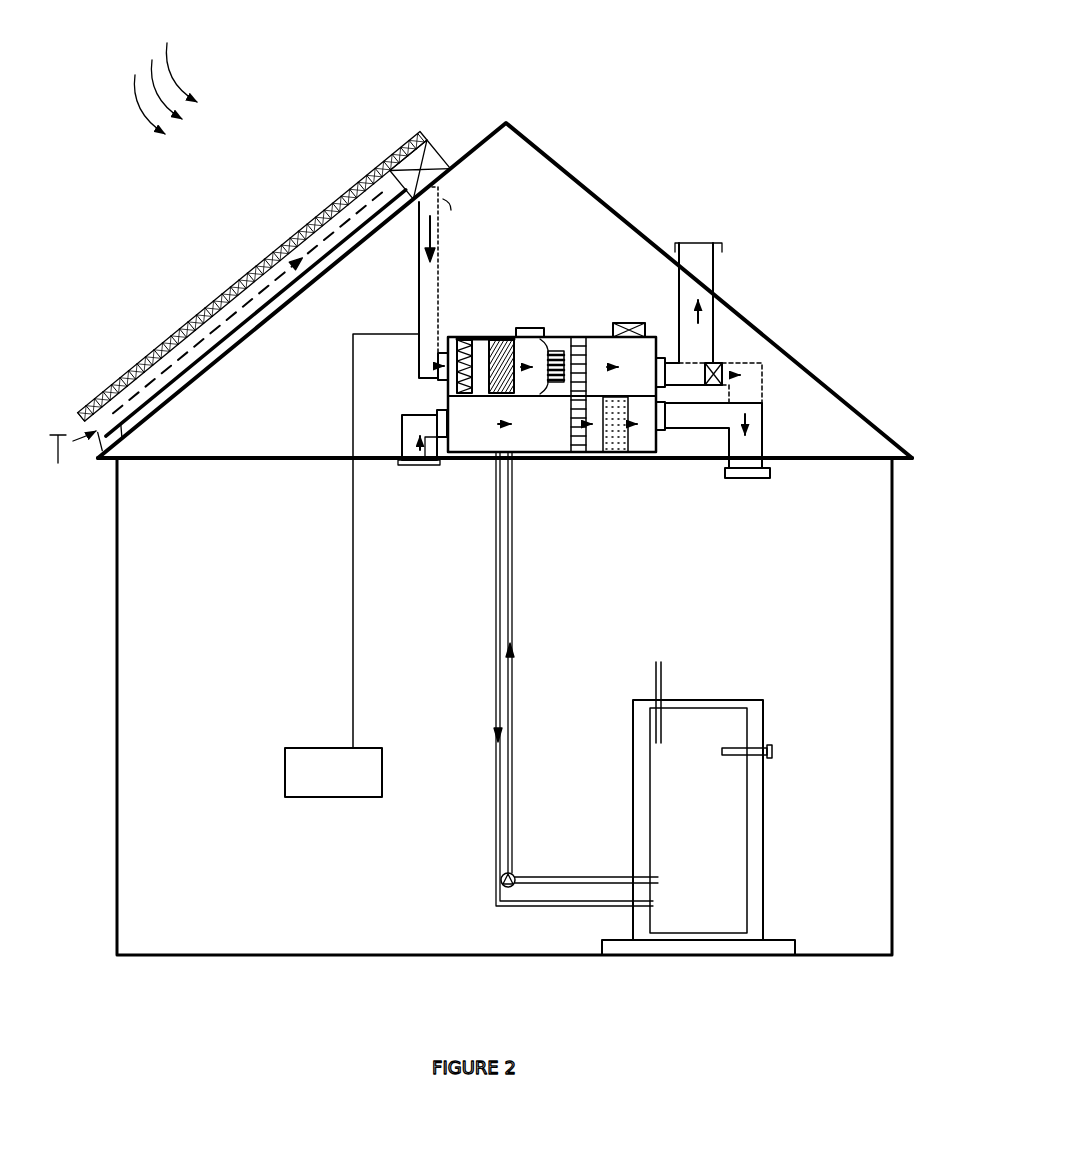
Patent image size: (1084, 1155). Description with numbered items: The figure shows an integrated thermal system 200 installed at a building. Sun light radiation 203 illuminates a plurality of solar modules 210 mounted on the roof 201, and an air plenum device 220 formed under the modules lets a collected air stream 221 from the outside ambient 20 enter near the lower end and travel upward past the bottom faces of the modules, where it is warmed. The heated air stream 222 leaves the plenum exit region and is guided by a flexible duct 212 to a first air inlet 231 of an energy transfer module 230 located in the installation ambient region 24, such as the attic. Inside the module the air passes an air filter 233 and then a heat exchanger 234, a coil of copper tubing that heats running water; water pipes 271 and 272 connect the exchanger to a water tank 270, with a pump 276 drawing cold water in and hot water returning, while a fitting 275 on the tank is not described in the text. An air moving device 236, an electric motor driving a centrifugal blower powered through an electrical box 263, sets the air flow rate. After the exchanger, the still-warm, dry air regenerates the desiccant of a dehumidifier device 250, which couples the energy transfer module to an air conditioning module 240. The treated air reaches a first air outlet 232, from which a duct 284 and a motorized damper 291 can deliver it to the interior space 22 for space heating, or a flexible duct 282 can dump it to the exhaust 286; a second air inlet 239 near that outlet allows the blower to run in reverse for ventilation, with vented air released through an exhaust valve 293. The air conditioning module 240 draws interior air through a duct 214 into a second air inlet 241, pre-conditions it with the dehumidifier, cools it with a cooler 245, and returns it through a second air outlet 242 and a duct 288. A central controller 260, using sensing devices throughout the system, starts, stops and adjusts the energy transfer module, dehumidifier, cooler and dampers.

The integrated thermal system 200 is at (498, 68).
The sun light radiation 203 is at (179, 88).
The ambient 20 is at (77, 376).
The interior space 22 is at (228, 551).
The building interior ambient space 24 is at (293, 424).
The solar modules 210 is at (377, 161).
The air plenum device 220 is at (213, 330).
The roof 201 is at (178, 400).
The collected air stream 221 is at (69, 461).
The air stream 222 is at (425, 232).
The exhaust valve 293 is at (432, 152).
The flexible duct 212 is at (419, 315).
The duct 214 is at (402, 441).
The energy transfer module 230 is at (598, 337).
The first air inlet 231 is at (436, 382).
The first air outlet 232 is at (662, 358).
The air filter 233 is at (466, 340).
The heat exchanger 234 is at (497, 337).
The air moving device 236 is at (555, 353).
The second air inlet 239 is at (630, 323).
The air conditioning module 240 is at (484, 453).
The second air inlet 241 is at (441, 438).
The second air outlet 242 is at (664, 432).
The cooler 245 is at (621, 452).
The dehumidifier device 250 is at (578, 452).
The electrical box 263 is at (524, 328).
The central controller 260 is at (341, 748).
The water tank 270 is at (698, 808).
The water pipe 271 is at (521, 584).
The water pipe 272 is at (494, 660).
The hot water outlet 275 is at (774, 746).
The pump 276 is at (514, 877).
The flexible duct 282 is at (717, 332).
The duct 284 is at (763, 388).
The exhaust 286 is at (722, 247).
The duct 288 is at (763, 443).
The motorized damper 291 is at (722, 363).